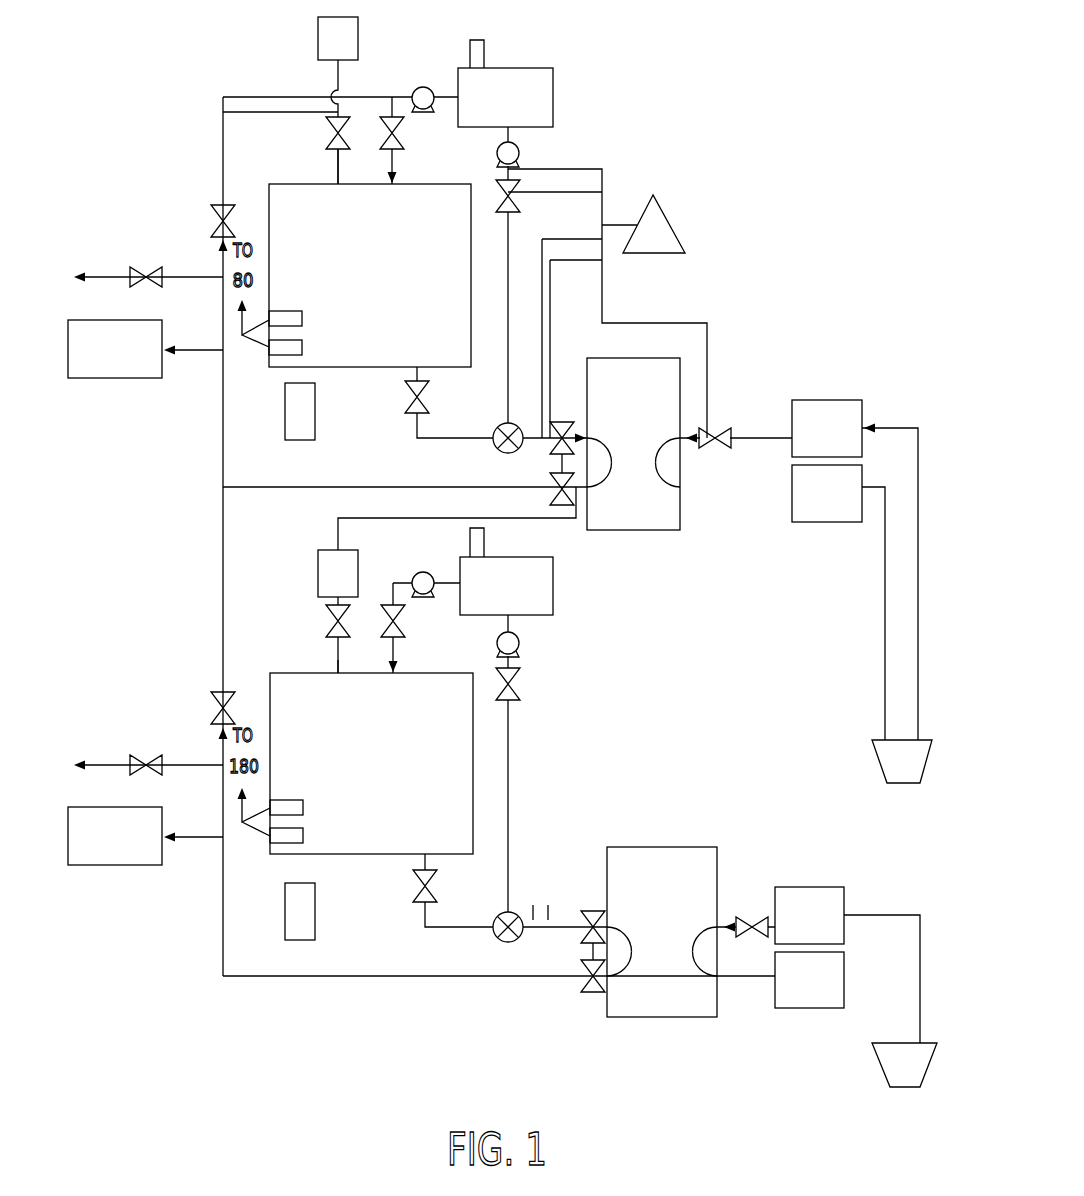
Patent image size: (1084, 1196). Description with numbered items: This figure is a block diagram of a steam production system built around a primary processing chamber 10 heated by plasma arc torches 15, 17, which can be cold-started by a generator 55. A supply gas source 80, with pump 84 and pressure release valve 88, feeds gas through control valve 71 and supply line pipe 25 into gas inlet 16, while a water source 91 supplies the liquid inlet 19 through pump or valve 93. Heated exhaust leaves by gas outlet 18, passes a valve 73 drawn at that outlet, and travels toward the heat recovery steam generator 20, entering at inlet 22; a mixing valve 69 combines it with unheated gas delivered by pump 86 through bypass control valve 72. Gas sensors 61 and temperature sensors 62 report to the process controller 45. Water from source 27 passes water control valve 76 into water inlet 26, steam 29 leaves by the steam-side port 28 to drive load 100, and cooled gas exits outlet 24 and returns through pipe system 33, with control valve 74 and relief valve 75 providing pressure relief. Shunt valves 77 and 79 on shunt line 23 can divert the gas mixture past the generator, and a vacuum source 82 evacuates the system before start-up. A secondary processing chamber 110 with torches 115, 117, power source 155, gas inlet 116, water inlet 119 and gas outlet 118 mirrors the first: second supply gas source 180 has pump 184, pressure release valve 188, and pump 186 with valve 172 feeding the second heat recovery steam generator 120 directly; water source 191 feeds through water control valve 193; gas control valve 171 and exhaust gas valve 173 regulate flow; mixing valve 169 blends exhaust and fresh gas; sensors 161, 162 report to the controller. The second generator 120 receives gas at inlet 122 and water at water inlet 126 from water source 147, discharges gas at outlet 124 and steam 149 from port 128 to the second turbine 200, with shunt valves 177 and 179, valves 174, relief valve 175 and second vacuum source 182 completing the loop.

The primary processing chamber 10 is at (269, 202).
The plasma arc torch 15 is at (283, 318).
The gas inlet 16 is at (396, 186).
The plasma arc torch 17 is at (278, 355).
The gas outlet 18 is at (418, 367).
The liquid inlet 19 is at (335, 186).
The heat recovery steam generator 20 is at (640, 358).
The HRSG inlet 22 is at (592, 440).
The shunt line 23 is at (548, 482).
The HRSG outlet 24 is at (596, 488).
The supply line pipe 25 is at (397, 140).
The water inlet 26 is at (672, 440).
The water source 27 is at (827, 400).
The HRSG steam outlet 28 is at (672, 488).
The steam 29 is at (827, 522).
The pipe system 33 is at (271, 486).
The process controller 45 is at (642, 245).
The generator 55 is at (290, 421).
The gas sensor 61 is at (540, 424).
The temperature sensor 62 is at (552, 424).
The mixing valve 69 is at (495, 447).
The supply gas control valve 71 is at (341, 164).
The bypass control valve 72 is at (515, 205).
The chamber outlet valve 73 is at (407, 395).
The control valve 74 is at (215, 215).
The relief valve 75 is at (160, 272).
The water control valve 76 is at (716, 430).
The shunt valve 77 is at (553, 448).
The shunt valve 79 is at (563, 508).
The supply gas source 80 is at (553, 98).
The vacuum source 82 is at (118, 378).
The pump 84 is at (421, 87).
The pump 86 is at (520, 152).
The pressure release valve 88 is at (484, 55).
The water source 91 is at (318, 40).
The water supply control valve 93 is at (330, 137).
The load 100 is at (887, 771).
The secondary processing chamber 110 is at (356, 672).
The torch 115 is at (283, 806).
The gas inlet 116 is at (397, 650).
The torch 117 is at (278, 845).
The gas outlet 118 is at (426, 866).
The water inlet 119 is at (335, 650).
The second heat recovery steam generator 120 is at (690, 848).
The inlet 122 is at (612, 928).
The outlet 124 is at (615, 977).
The water inlet 126 is at (695, 928).
The HRSG steam outlet 128 is at (695, 977).
The water supply 147 is at (809, 887).
The steam output 149 is at (809, 1008).
The power source 155 is at (287, 921).
The sensor 161 is at (533, 905).
The sensor 162 is at (548, 905).
The mixing valve 169 is at (495, 938).
The gas control valve 171 is at (400, 624).
The valve 172 is at (515, 687).
The exhaust gas valve 173 is at (414, 882).
The valve 174 is at (215, 705).
The relief valve 175 is at (158, 760).
The shunt valve 177 is at (585, 935).
The shunt valve 179 is at (585, 985).
The second supply gas source 180 is at (553, 595).
The second vacuum source 182 is at (118, 865).
The pump 184 is at (412, 582).
The pump 186 is at (520, 645).
The pressure release valve 188 is at (470, 548).
The water source 191 is at (318, 575).
The water control valve 193 is at (328, 625).
The second turbine 200 is at (888, 1075).